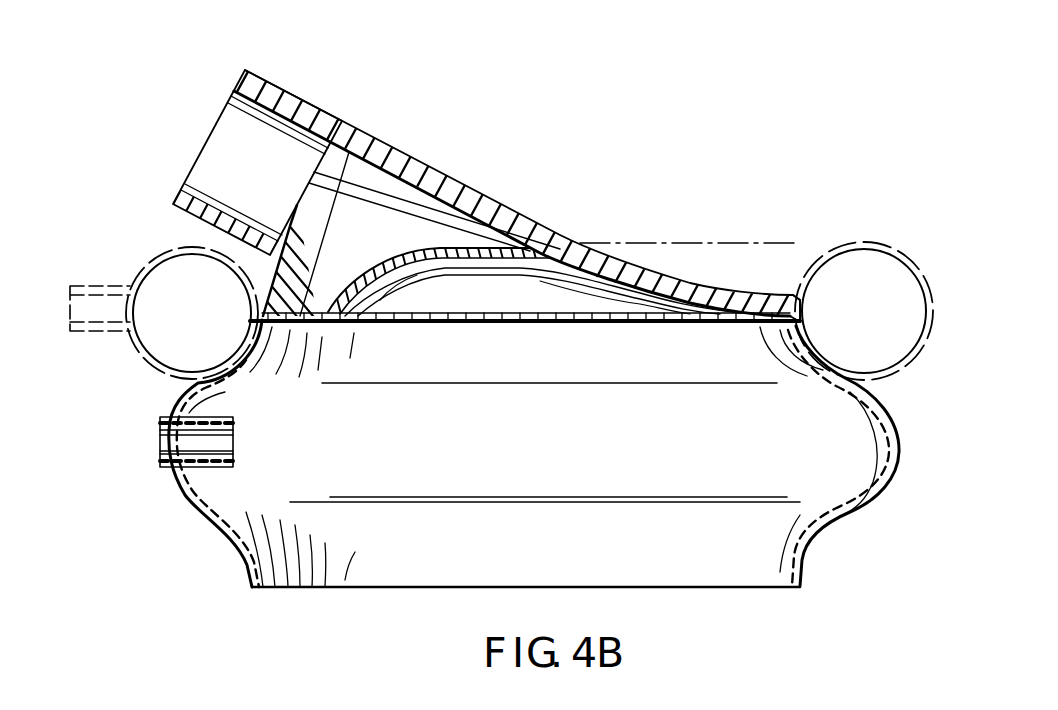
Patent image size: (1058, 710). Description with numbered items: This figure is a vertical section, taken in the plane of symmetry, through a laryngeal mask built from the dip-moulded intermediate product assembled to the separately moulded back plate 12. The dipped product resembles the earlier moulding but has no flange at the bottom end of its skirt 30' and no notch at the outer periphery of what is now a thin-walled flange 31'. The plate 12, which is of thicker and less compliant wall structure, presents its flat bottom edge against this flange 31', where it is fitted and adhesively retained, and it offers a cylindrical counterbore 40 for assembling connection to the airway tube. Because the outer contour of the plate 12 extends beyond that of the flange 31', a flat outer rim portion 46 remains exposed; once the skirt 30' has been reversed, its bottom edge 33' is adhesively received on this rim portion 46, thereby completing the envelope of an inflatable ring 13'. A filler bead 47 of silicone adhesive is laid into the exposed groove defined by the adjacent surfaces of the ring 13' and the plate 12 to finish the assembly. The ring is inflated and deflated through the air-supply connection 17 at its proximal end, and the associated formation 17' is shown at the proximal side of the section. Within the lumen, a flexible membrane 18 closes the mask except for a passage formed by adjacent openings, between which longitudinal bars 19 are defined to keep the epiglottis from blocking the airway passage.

The back plate 12 is at (486, 189).
The inflatable ring 13' is at (756, 287).
The inflation/deflation connection 17 is at (164, 298).
The conduit 17' is at (222, 430).
The flexible membrane 18 is at (467, 262).
The longitudinal bars 19 is at (385, 260).
The skirt 30' is at (534, 453).
The thin-walled flange 31' is at (525, 343).
The bottom edge of skirt 33' is at (526, 607).
The cylindrical counterbore 40 is at (222, 160).
The flat outer rim portion 46 is at (801, 305).
The filler bead 47 is at (790, 292).